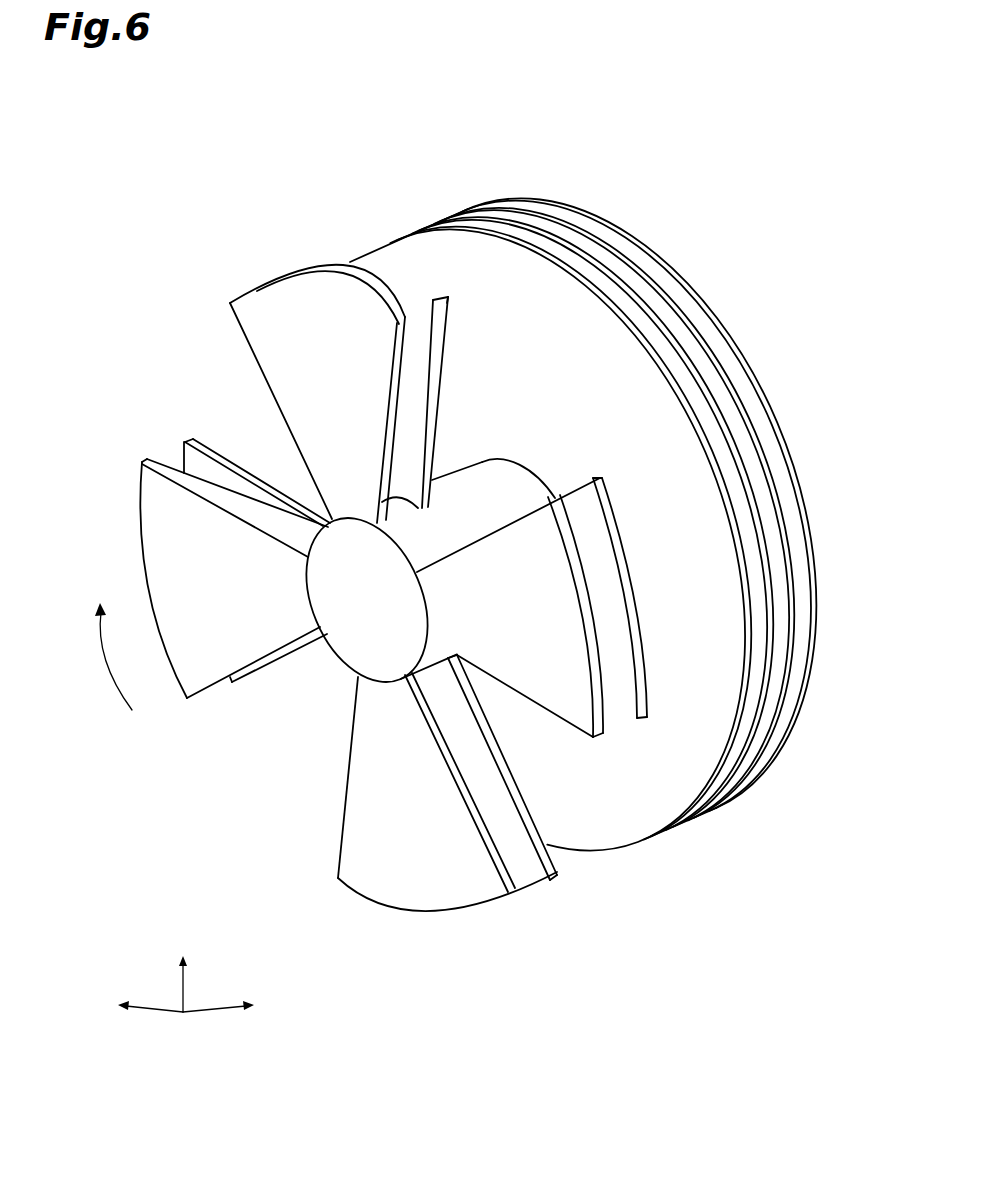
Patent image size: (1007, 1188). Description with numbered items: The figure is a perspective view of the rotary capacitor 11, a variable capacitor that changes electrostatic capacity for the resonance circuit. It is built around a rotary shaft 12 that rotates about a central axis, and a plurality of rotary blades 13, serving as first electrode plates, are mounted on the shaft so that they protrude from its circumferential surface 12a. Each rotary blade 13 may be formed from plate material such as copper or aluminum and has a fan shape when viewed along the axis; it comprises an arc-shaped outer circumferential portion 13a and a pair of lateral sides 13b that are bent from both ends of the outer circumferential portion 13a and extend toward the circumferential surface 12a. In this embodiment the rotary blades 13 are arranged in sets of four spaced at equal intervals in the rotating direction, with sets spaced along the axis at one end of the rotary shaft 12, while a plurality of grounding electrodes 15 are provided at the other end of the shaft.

The rotary capacitor 11 is at (243, 150).
The rotary shaft 12 is at (360, 620).
The circumferential surface 12a is at (490, 468).
The rotary blade 13 is at (260, 308).
The outer circumferential portion 13a is at (370, 292).
The lateral side 13b is at (407, 370).
The grounding electrode 15 is at (635, 332).